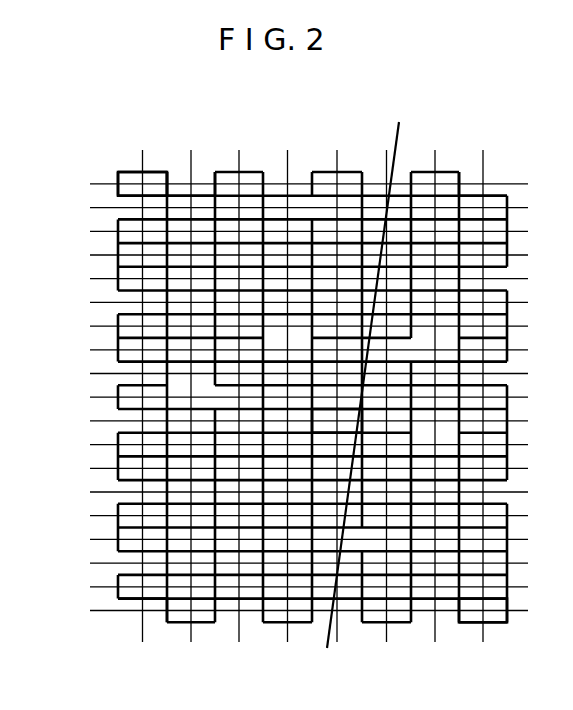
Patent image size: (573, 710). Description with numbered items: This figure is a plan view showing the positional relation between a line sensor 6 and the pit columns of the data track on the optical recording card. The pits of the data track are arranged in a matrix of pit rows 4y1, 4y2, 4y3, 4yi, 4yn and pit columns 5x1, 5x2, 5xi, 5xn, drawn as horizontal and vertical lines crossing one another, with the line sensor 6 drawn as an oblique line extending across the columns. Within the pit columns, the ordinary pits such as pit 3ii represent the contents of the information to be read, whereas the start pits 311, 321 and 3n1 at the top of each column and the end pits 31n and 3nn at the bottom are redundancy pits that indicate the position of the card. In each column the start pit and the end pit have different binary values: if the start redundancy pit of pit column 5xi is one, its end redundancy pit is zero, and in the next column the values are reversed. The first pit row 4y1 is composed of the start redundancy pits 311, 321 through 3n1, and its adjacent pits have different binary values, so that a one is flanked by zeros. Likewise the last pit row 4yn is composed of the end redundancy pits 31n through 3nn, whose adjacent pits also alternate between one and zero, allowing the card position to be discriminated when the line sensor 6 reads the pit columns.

The pit row 4y1 is at (281, 185).
The pit row 4y2 is at (281, 209).
The pit row 4y3 is at (281, 233).
The pit row 4yi is at (283, 421).
The pit row 4yn is at (281, 611).
The pit column 5x1 is at (143, 170).
The pit column 5x2 is at (191, 170).
The pit column 5xi is at (337, 170).
The pit column 5xn is at (483, 170).
The line sensor 6 is at (397, 127).
The start redundancy pit 311 is at (142, 178).
The start redundancy pit 321 is at (191, 180).
The start redundancy pit 3n1 is at (487, 190).
The end redundancy pit 31n is at (142, 614).
The pit 3ii is at (335, 432).
The end redundancy pit 3nn is at (485, 614).